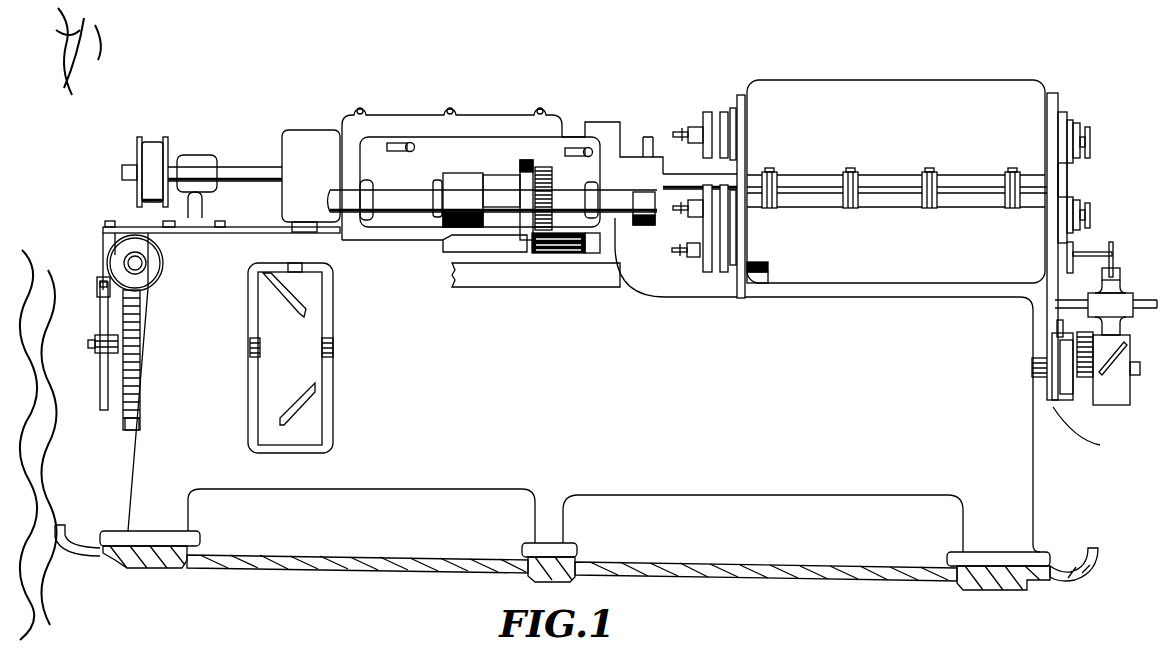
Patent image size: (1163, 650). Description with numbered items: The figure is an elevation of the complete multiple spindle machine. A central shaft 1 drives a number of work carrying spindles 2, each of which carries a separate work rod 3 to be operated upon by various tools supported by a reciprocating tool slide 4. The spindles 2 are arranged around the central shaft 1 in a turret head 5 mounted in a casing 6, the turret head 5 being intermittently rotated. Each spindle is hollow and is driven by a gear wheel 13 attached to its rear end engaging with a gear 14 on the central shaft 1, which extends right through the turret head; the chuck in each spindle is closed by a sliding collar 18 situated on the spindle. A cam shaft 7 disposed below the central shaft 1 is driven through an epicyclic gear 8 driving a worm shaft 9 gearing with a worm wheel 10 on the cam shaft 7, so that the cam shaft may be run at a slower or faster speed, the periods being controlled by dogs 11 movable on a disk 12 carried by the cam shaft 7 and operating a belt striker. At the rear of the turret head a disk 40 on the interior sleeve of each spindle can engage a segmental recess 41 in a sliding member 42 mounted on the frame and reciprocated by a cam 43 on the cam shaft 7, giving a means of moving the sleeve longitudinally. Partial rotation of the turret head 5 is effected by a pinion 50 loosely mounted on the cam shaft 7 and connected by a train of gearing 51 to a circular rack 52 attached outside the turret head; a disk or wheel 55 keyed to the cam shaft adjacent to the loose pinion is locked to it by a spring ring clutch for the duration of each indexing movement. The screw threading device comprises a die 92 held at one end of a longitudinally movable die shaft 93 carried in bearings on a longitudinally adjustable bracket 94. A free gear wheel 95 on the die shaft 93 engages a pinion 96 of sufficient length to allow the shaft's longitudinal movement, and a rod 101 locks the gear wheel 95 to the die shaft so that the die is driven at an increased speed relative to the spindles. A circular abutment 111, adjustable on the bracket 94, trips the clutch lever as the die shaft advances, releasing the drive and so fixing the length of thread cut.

The central shaft 1 is at (232, 167).
The work carrying spindles 2 is at (735, 114).
The work rod 3 is at (682, 132).
The reciprocating tool slide 4 is at (315, 145).
The turret head 5 is at (740, 95).
The casing 6 is at (896, 181).
The cam shaft 7 is at (326, 342).
The epicyclic gear 8 is at (122, 249).
The worm shaft 9 is at (140, 261).
The worm wheel 10 is at (126, 424).
The dogs 11 is at (99, 282).
The disk 12 is at (103, 384).
The gear wheel 13 is at (1069, 125).
The gear on the central shaft 14 is at (1066, 177).
The sliding collar 18 is at (714, 126).
The disk 40 is at (1114, 254).
The segmental recess 41 is at (1121, 274).
The sliding member 42 is at (1106, 307).
The cam 43 is at (1117, 395).
The pinion 50 is at (1053, 405).
The train of gearing 51 is at (1057, 327).
The circular rack 52 is at (1052, 105).
The disk or wheel 55 is at (1088, 431).
The die 92 is at (643, 226).
The die shaft 93 is at (493, 200).
The bracket 94 is at (456, 187).
The free gear wheel 95 is at (553, 178).
The pinion 96 is at (567, 254).
The rod 101 is at (493, 174).
The circular abutment 111 is at (528, 160).